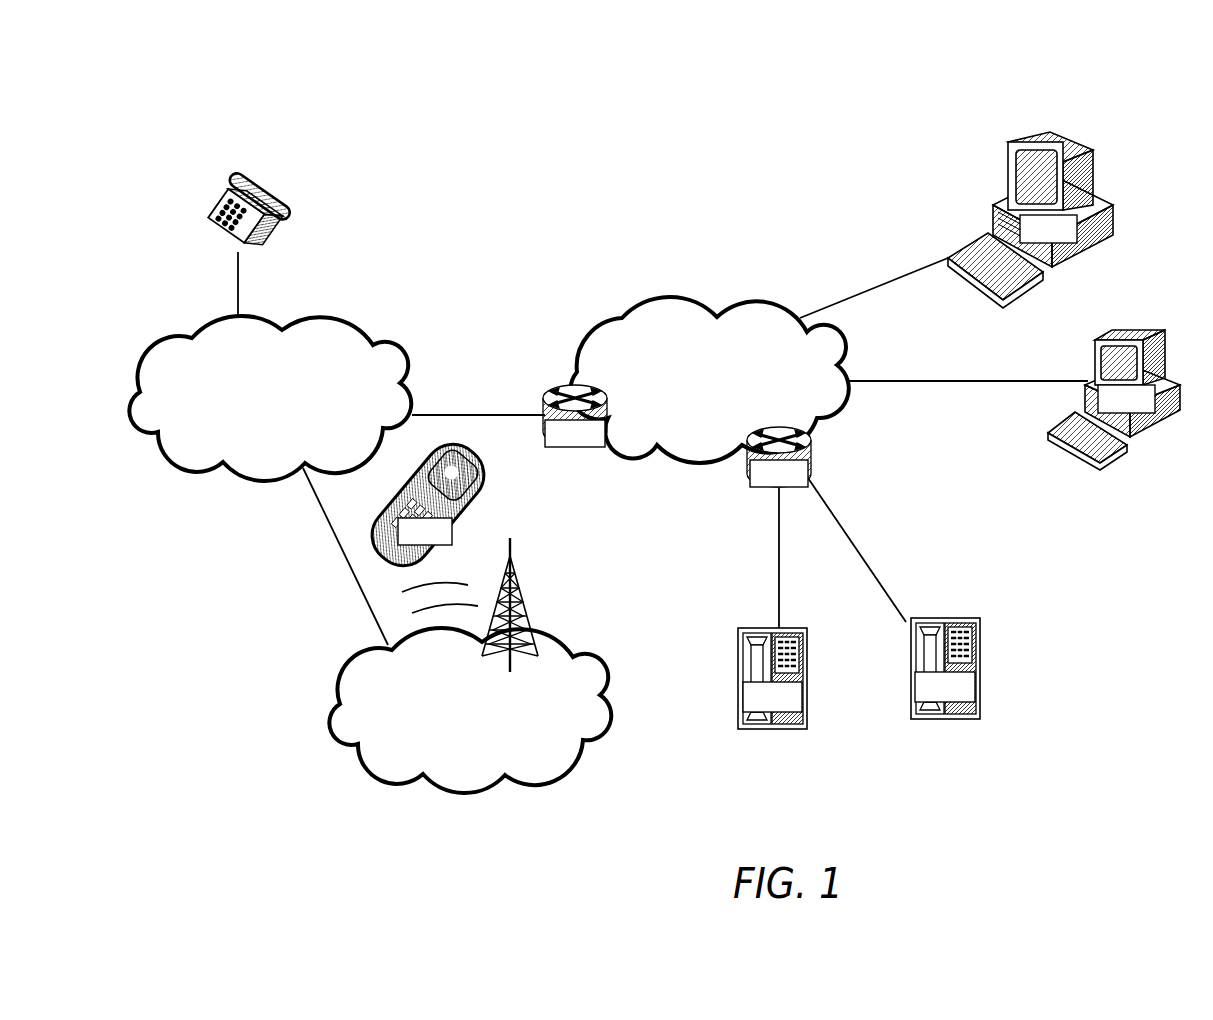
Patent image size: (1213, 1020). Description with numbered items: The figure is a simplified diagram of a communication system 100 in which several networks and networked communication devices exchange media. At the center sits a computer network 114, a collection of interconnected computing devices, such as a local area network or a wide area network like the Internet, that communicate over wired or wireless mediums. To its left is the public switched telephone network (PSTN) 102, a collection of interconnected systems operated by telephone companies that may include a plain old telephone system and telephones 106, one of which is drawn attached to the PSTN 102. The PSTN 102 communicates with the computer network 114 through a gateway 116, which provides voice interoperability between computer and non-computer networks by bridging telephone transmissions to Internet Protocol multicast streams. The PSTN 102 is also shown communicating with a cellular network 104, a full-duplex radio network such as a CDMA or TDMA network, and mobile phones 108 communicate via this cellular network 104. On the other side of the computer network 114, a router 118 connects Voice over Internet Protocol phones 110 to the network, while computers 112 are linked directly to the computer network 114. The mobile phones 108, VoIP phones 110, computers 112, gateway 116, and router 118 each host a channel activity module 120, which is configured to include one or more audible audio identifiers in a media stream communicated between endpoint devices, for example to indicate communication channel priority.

The communication system 100 is at (921, 97).
The public switched telephone network (PSTN) 102 is at (322, 409).
The cellular network 104 is at (490, 735).
The telephone 106 is at (278, 214).
The mobile phone 108 is at (493, 507).
The Voice over Internet Protocol (VoIP) phone 110 is at (738, 662).
The computer 112 is at (1095, 245).
The computer network 114 is at (726, 405).
The gateway 116 is at (547, 388).
The router 118 is at (888, 454).
The channel activity module 120 is at (594, 444).